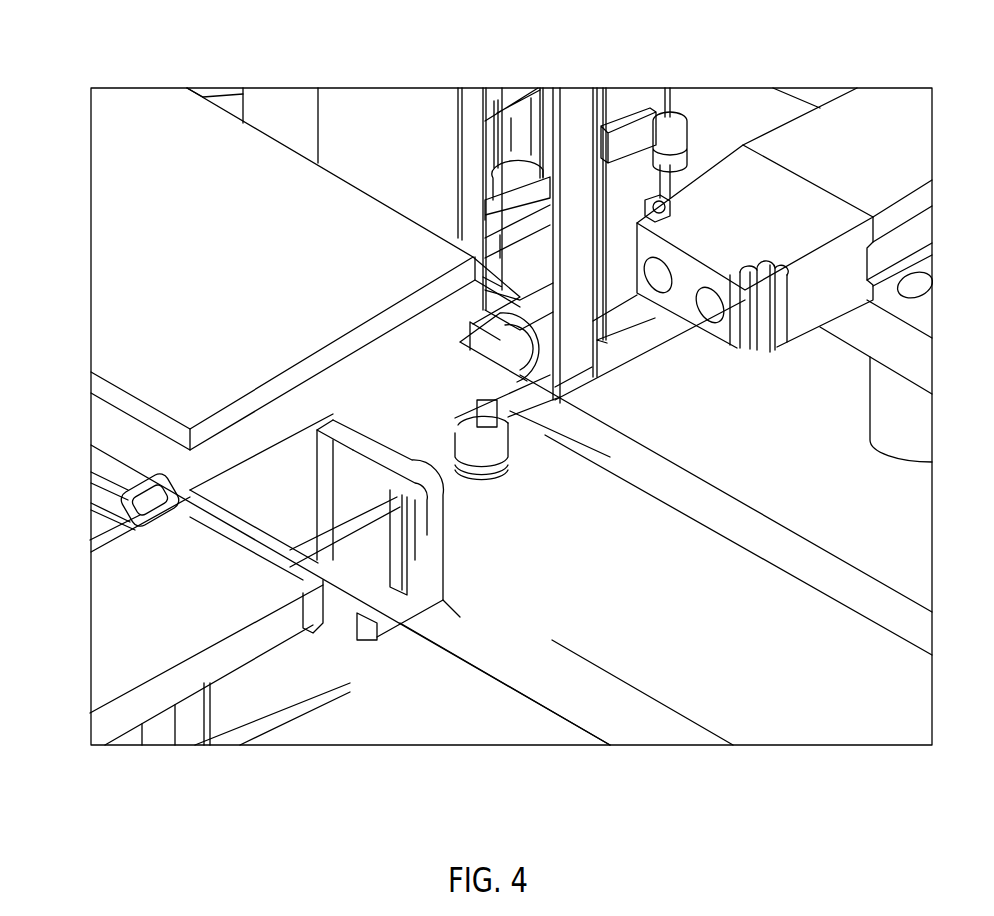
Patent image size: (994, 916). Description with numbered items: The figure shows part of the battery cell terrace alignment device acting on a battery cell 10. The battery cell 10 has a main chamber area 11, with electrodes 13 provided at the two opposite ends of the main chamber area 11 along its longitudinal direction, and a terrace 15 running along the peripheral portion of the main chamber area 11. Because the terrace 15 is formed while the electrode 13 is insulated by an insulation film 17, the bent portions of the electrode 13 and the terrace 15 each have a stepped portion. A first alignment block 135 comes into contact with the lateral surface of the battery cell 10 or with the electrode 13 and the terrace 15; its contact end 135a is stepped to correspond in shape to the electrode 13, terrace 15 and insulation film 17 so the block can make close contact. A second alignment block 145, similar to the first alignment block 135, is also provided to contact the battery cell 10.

The battery cell 10 is at (185, 497).
The main chamber area 11 is at (287, 347).
The electrode 13 is at (438, 408).
The terrace 15 is at (268, 437).
The insulation film 17 is at (333, 423).
The first alignment block 135 is at (728, 200).
The contact end 135a is at (660, 228).
The second alignment block 145 is at (268, 490).